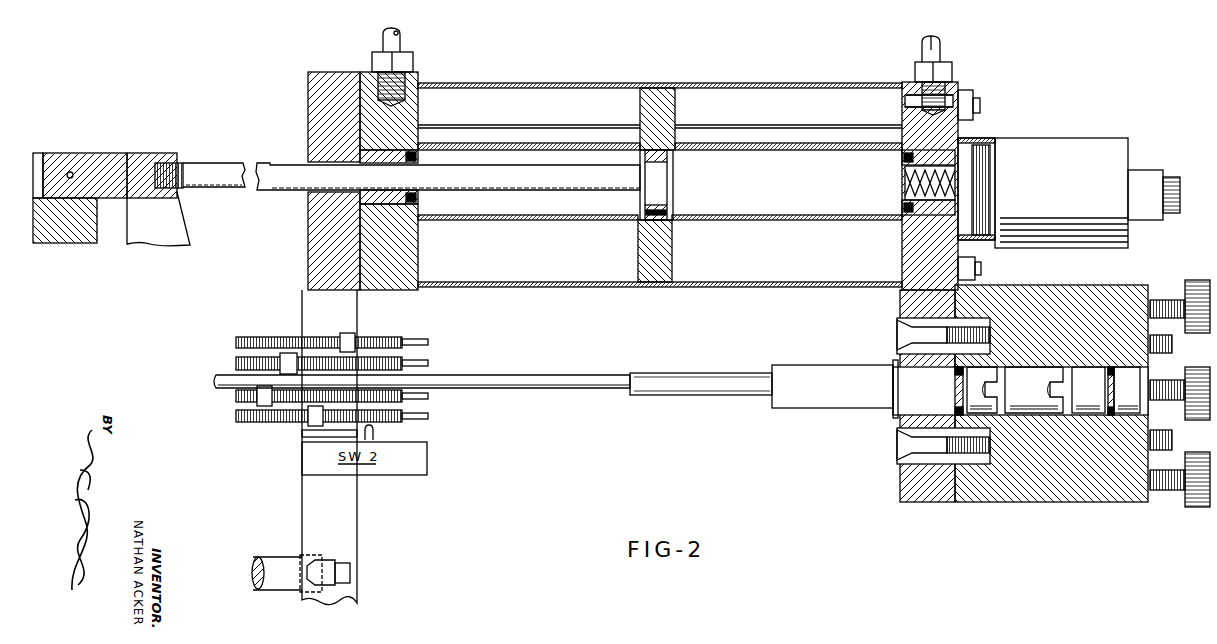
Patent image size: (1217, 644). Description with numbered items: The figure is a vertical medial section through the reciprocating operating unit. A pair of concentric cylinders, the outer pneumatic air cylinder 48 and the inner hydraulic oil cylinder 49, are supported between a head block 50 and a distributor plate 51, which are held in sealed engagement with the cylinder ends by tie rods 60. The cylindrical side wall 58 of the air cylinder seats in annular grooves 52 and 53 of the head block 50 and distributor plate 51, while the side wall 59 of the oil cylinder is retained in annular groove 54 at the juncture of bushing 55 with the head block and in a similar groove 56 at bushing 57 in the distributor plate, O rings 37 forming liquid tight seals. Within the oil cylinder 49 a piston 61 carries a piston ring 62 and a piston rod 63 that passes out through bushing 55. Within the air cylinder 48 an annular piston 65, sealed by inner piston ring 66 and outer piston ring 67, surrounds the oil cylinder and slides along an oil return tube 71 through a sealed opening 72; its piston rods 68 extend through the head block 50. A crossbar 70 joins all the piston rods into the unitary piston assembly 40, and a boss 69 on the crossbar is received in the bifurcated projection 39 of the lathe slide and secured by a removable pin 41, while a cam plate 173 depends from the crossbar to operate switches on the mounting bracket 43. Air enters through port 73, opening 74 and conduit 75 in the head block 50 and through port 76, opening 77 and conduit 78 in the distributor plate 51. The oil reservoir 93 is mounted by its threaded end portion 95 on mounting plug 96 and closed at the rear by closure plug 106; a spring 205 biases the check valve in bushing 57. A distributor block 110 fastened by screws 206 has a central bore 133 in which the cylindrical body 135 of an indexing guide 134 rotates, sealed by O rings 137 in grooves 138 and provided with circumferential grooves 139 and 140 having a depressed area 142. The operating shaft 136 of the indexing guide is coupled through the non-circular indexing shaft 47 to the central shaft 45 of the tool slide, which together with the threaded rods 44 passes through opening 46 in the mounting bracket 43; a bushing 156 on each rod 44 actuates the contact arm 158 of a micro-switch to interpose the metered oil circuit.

The piston assembly 40 is at (262, 89).
The removable pin 41 is at (80, 170).
The boss 69 is at (69, 171).
The bifurcated projection 39 is at (56, 244).
The cam plate 173 is at (170, 236).
The crossbar 70 is at (131, 200).
The piston rod 63 is at (210, 164).
The piston rods 68 is at (252, 164).
The mounting bracket 43 is at (322, 240).
The head block 50 is at (384, 291).
The annular groove 52 is at (418, 286).
The O rings 37 is at (410, 156).
The annular groove 54 is at (415, 197).
The bushing 55 is at (414, 232).
The opening 74 is at (372, 60).
The conduit 75 is at (400, 38).
The port 73 is at (406, 97).
The cylindrical side wall 58 is at (554, 87).
The oil return tube 71 is at (494, 129).
The cylindrical side wall 59 is at (560, 221).
The opening 72 is at (640, 113).
The annular piston 65 is at (672, 262).
The piston ring 62 is at (650, 170).
The piston 61 is at (652, 203).
The inner piston ring 66 is at (672, 222).
The outer piston ring 67 is at (650, 285).
The oil cylinder 49 is at (801, 192).
The air cylinder 48 is at (801, 271).
The annular groove 53 is at (905, 275).
The port 76 is at (905, 104).
The spring 205 is at (918, 186).
The annular groove 56 is at (906, 208).
The bushing 57 is at (906, 232).
The opening 77 is at (955, 84).
The conduit 78 is at (940, 48).
The tie rods 60 is at (982, 107).
The threaded end portion 95 is at (990, 138).
The mounting plug 96 is at (990, 186).
The oil reservoir 93 is at (1086, 211).
The closure plug 106 is at (1180, 200).
The distributor plate 51 is at (906, 480).
The distributor block 110 is at (1080, 504).
The screws 206 is at (910, 336).
The O rings 137 is at (954, 378).
The grooves 138 is at (962, 398).
The depressed area 142 is at (981, 389).
The indexing guide 134 is at (1042, 398).
The circumferential groove 140 is at (998, 388).
The circumferential groove 139 is at (1052, 376).
The central bore 133 is at (1100, 401).
The cylindrical body 135 is at (1140, 401).
The opening 46 is at (318, 306).
The threaded rods 44 is at (276, 338).
The bushing 156 is at (352, 334).
The central shaft 45 is at (572, 389).
The indexing shaft 47 is at (748, 394).
The operating shaft 136 is at (812, 393).
The contact arm 158 is at (378, 432).